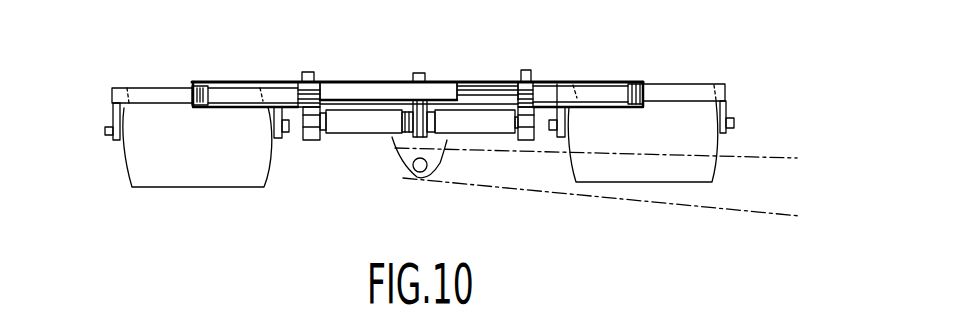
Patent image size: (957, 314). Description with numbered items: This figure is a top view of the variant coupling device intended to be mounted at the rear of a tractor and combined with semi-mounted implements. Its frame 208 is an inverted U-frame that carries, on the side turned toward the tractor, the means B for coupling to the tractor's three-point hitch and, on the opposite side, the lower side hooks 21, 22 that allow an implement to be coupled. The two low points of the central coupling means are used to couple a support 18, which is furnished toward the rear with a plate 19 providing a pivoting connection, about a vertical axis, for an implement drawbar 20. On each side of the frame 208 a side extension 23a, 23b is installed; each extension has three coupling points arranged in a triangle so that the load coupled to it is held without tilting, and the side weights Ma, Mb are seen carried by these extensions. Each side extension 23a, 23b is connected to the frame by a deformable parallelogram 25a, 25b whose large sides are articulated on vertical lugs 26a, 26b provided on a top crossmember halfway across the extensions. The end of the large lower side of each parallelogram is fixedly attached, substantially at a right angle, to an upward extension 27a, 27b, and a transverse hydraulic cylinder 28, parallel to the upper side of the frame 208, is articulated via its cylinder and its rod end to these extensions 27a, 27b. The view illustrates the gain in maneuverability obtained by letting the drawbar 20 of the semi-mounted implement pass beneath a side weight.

The side extension 23a is at (117, 82).
The side extension 23b is at (706, 82).
The vertical lug 26a is at (189, 89).
The vertical lug 26b is at (647, 90).
The deformable parallelogram 25a is at (231, 79).
The deformable parallelogram 25b is at (597, 80).
The upward extension 27a is at (296, 88).
The upward extension 27b is at (538, 82).
The hydraulic cylinder 28 is at (388, 81).
The frame 208 is at (453, 78).
The means for coupling to the tractor's three-point hitch B is at (319, 65).
The lower side hook 21 is at (313, 140).
The support 18 is at (350, 123).
The plate 19 is at (399, 135).
The lower side hook 22 is at (530, 141).
The implement drawbar 20 is at (560, 181).
The left roller Ma is at (145, 157).
The right roller Mb is at (703, 143).